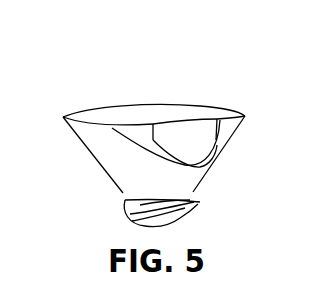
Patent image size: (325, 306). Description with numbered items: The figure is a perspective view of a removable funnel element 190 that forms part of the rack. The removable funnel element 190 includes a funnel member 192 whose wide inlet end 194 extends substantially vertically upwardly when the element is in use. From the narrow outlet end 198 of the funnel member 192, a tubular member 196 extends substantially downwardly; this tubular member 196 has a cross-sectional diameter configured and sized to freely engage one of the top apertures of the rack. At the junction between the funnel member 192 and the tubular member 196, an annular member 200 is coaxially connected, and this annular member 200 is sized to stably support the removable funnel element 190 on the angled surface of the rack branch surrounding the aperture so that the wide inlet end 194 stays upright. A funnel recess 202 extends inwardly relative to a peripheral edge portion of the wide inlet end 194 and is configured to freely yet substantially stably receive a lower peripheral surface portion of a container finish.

The removable funnel element 190 is at (120, 63).
The funnel member 192 is at (105, 146).
The wide inlet end 194 is at (171, 108).
The funnel recess 202 is at (217, 126).
The narrow outlet end 198 is at (127, 195).
The tubular member 196 is at (177, 216).
The annular member 200 is at (188, 199).